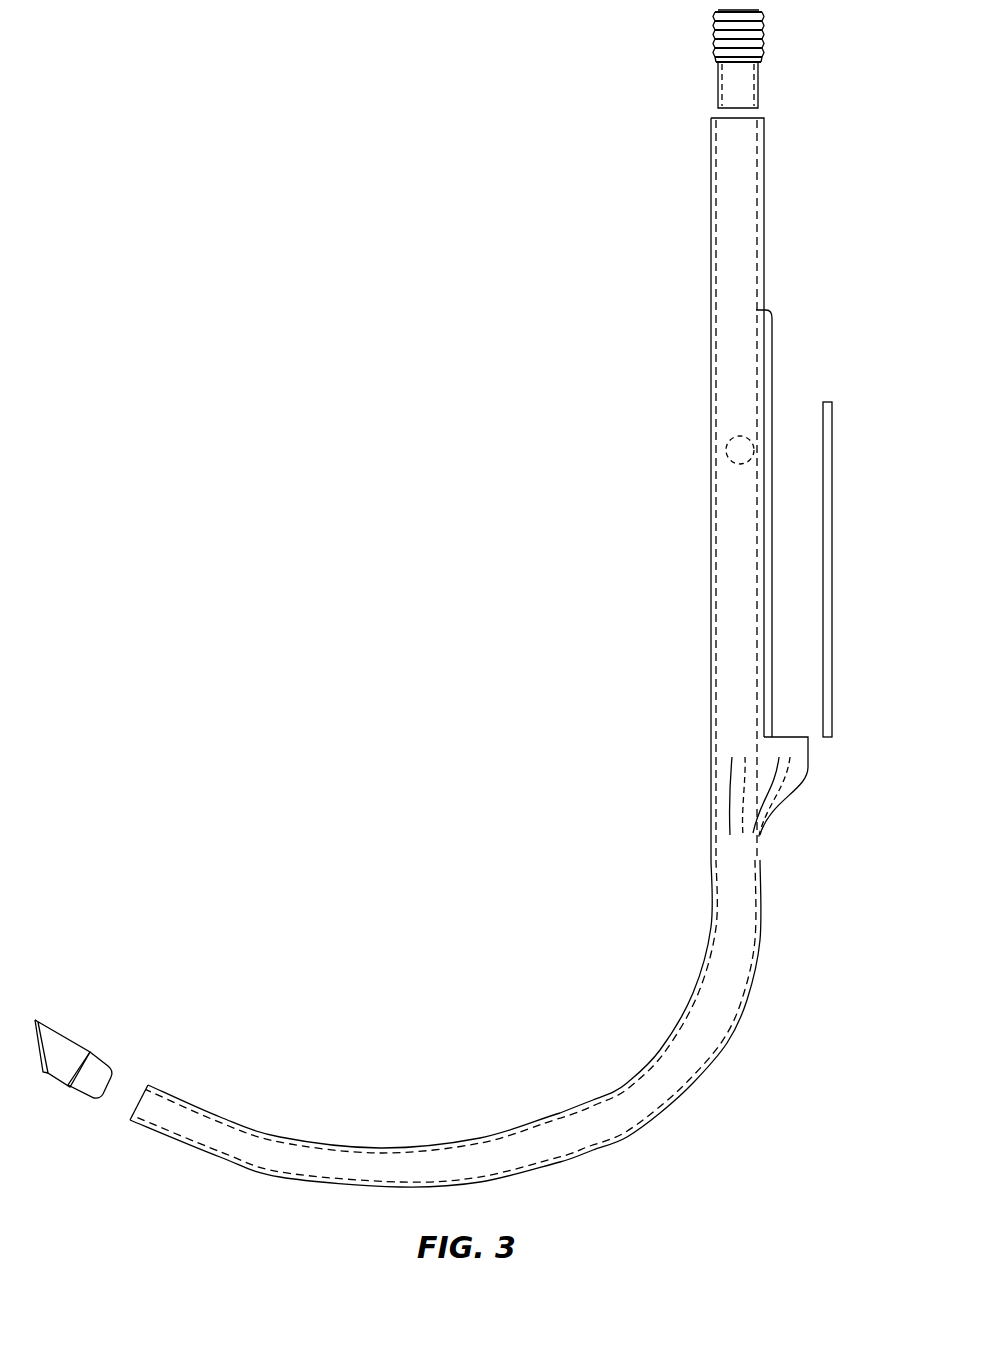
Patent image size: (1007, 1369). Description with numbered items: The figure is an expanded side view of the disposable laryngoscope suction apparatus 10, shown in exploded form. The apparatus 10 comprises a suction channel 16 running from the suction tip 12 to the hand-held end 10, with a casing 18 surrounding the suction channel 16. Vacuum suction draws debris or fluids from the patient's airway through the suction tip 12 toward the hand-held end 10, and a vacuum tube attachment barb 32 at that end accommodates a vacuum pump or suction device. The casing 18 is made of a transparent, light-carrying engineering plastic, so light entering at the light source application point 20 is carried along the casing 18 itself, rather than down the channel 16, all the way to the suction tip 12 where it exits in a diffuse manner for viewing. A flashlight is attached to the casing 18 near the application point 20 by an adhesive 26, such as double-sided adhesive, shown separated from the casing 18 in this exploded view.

The hand-held end 10 is at (796, 166).
The suction tip 12 is at (62, 1085).
The suction channel 16 is at (445, 1023).
The casing 18 is at (493, 1140).
The light source application point 20 is at (783, 735).
The adhesive 26 is at (834, 463).
The vacuum tube attachment barb 32 is at (743, 91).